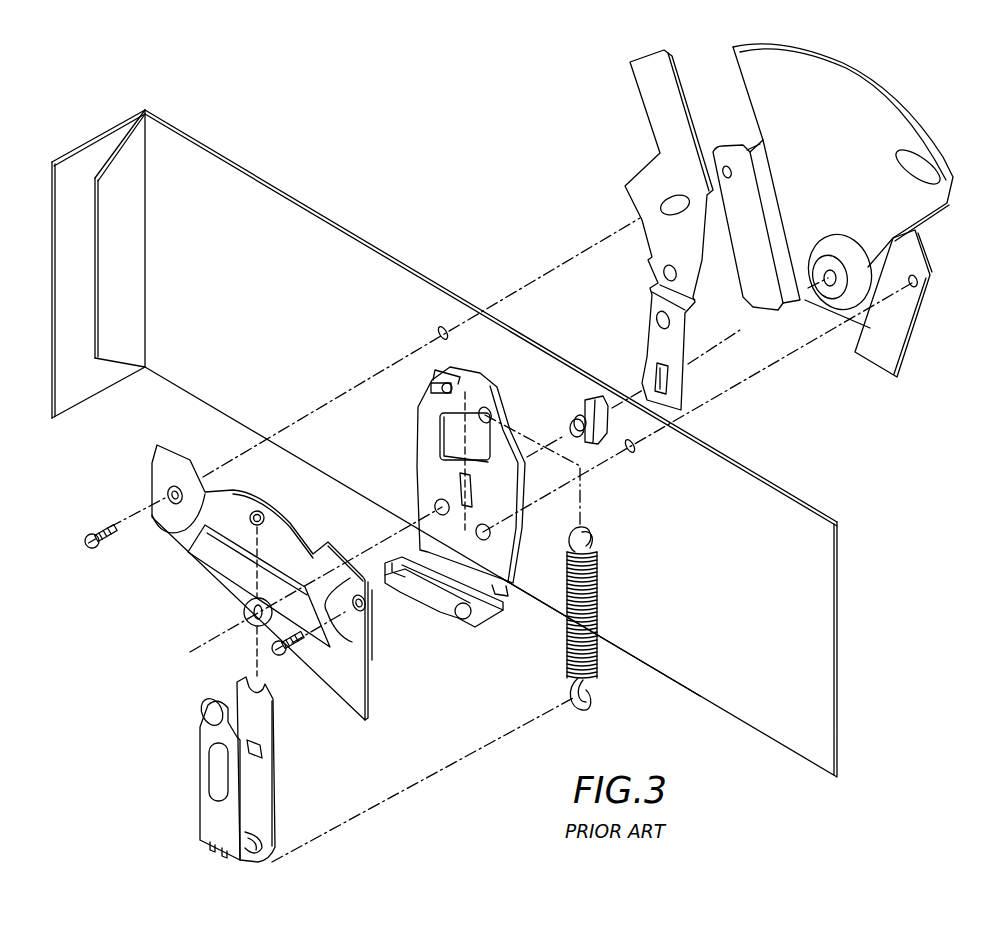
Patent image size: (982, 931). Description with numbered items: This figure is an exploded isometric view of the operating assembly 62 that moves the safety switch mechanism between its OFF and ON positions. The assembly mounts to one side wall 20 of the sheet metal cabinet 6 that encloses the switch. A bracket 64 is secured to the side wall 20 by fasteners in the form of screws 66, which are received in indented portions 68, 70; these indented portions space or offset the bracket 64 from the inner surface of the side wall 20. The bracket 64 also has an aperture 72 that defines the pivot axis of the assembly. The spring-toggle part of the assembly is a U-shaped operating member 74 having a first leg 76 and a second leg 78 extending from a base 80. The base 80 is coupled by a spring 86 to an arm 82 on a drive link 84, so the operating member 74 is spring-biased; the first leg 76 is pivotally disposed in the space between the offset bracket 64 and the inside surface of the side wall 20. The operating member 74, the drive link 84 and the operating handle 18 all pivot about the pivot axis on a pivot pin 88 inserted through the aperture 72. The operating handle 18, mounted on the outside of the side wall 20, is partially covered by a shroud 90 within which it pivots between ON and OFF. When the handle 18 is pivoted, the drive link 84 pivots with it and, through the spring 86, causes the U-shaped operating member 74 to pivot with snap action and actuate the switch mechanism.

The sheet metal cabinet 6 is at (444, 443).
The side wall 20 is at (722, 575).
The operating assembly 62 is at (661, 728).
The operating handle 18 is at (688, 238).
The shroud 90 is at (928, 205).
The bracket 64 is at (268, 582).
The indented portion 70 is at (162, 487).
The aperture 72 is at (250, 612).
The indented portion 68 is at (366, 608).
The screws 66 is at (100, 549).
The U-shaped operating member 74 is at (233, 769).
The first leg 76 is at (262, 722).
The second leg 78 is at (205, 757).
The base 80 is at (262, 852).
The arm 82 is at (458, 365).
The drive link 84 is at (472, 476).
The pivot pin 88 is at (592, 440).
The spring 86 is at (597, 598).